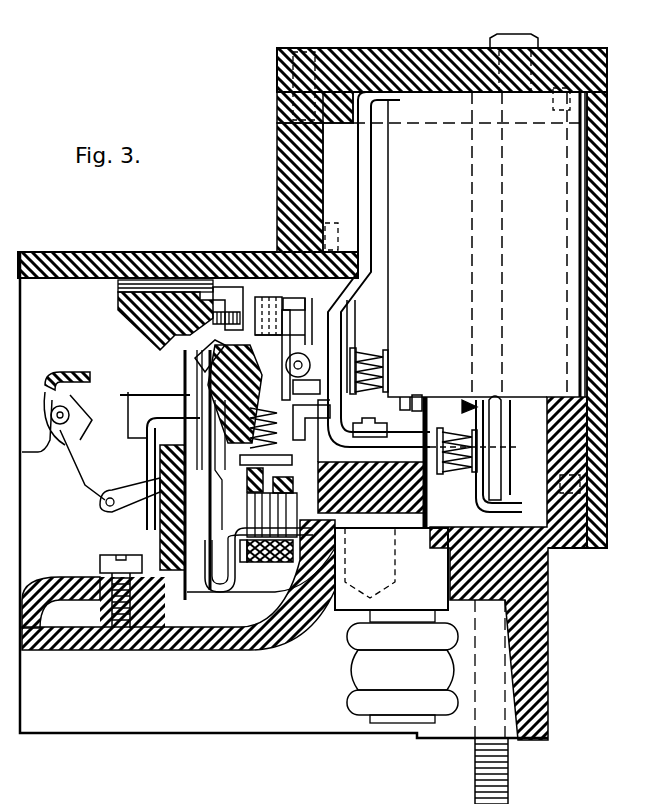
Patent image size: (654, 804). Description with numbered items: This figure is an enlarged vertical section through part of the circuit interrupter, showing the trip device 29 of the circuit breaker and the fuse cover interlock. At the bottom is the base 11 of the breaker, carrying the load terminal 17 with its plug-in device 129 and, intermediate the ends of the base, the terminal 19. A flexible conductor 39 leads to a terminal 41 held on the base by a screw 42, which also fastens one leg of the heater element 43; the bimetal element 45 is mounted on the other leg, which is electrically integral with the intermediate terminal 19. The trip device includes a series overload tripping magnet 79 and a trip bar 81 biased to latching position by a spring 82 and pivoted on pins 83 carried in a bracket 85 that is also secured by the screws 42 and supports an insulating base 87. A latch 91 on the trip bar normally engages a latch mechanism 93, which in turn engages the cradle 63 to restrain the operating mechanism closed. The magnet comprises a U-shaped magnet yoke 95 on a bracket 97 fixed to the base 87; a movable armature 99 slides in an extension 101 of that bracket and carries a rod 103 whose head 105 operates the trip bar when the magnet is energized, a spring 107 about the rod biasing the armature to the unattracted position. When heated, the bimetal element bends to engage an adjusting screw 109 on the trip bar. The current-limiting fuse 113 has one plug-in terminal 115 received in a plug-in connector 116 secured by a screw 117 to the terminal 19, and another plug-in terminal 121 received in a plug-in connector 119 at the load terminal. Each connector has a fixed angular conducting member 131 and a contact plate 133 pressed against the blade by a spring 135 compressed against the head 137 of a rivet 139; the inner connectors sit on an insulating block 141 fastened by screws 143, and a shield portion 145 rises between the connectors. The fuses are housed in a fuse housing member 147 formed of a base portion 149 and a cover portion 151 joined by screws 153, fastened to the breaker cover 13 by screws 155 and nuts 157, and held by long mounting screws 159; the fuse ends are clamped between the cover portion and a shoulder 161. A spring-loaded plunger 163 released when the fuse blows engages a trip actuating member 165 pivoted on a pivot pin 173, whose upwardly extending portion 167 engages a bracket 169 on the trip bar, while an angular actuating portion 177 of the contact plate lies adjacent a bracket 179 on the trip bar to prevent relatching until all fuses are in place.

The base 11 is at (53, 647).
The breaker cover 13 is at (110, 260).
The load terminal 17 is at (447, 527).
The intermediate terminal 19 is at (278, 548).
The trip device 29 is at (237, 300).
The flexible conductor 39 is at (45, 577).
The terminal 41 is at (92, 580).
The screw 42 is at (102, 550).
The heater element 43 is at (130, 501).
The bimetal element 45 is at (212, 520).
The cradle 63 is at (30, 400).
The series overload tripping magnet 79 is at (277, 588).
The trip bar 81 is at (200, 345).
The spring 82 is at (173, 474).
The pin 83 is at (190, 396).
The bracket 85 is at (143, 408).
The insulating base 87 is at (125, 305).
The latch 91 is at (195, 358).
The latch mechanism 93 is at (87, 361).
The U-shaped magnet yoke 95 is at (300, 568).
The bracket 97 is at (205, 577).
The movable armature 99 is at (270, 508).
The extension 101 is at (240, 466).
The rod 103 is at (275, 497).
The head 105 is at (284, 325).
The spring 107 is at (309, 392).
The adjusting screw 109 is at (251, 310).
The current-limiting fuse 113 is at (552, 262).
The plug-in terminal 115 is at (367, 240).
The plug-in connector 116 is at (415, 332).
The screw 117 is at (378, 432).
The plug-in connector 119 is at (535, 435).
The plug-in terminal 121 is at (490, 402).
The plug-in device 129 is at (370, 664).
The angular conducting member 131 is at (330, 308).
The contact plate 133 is at (349, 318).
The spring 135 is at (380, 360).
The head 137 is at (386, 366).
The rivet 139 is at (372, 348).
The insulating block 141 is at (413, 515).
The screw 143 is at (398, 580).
The portion 145 is at (440, 405).
The fuse housing member 147 is at (644, 293).
The base portion 149 is at (600, 175).
The cover portion 151 is at (605, 58).
The screw 153 is at (566, 200).
The screw 155 is at (282, 168).
The nut 157 is at (303, 50).
The mounting screw 159 is at (508, 38).
The shoulder 161 is at (586, 390).
The spring-loaded plunger 163 is at (403, 397).
The trip actuating member 165 is at (420, 402).
The upwardly extending portion 167 is at (283, 305).
The bracket 169 is at (281, 312).
The pivot pin 173 is at (298, 353).
The angular actuating portion 177 is at (343, 408).
The bracket 179 is at (272, 450).